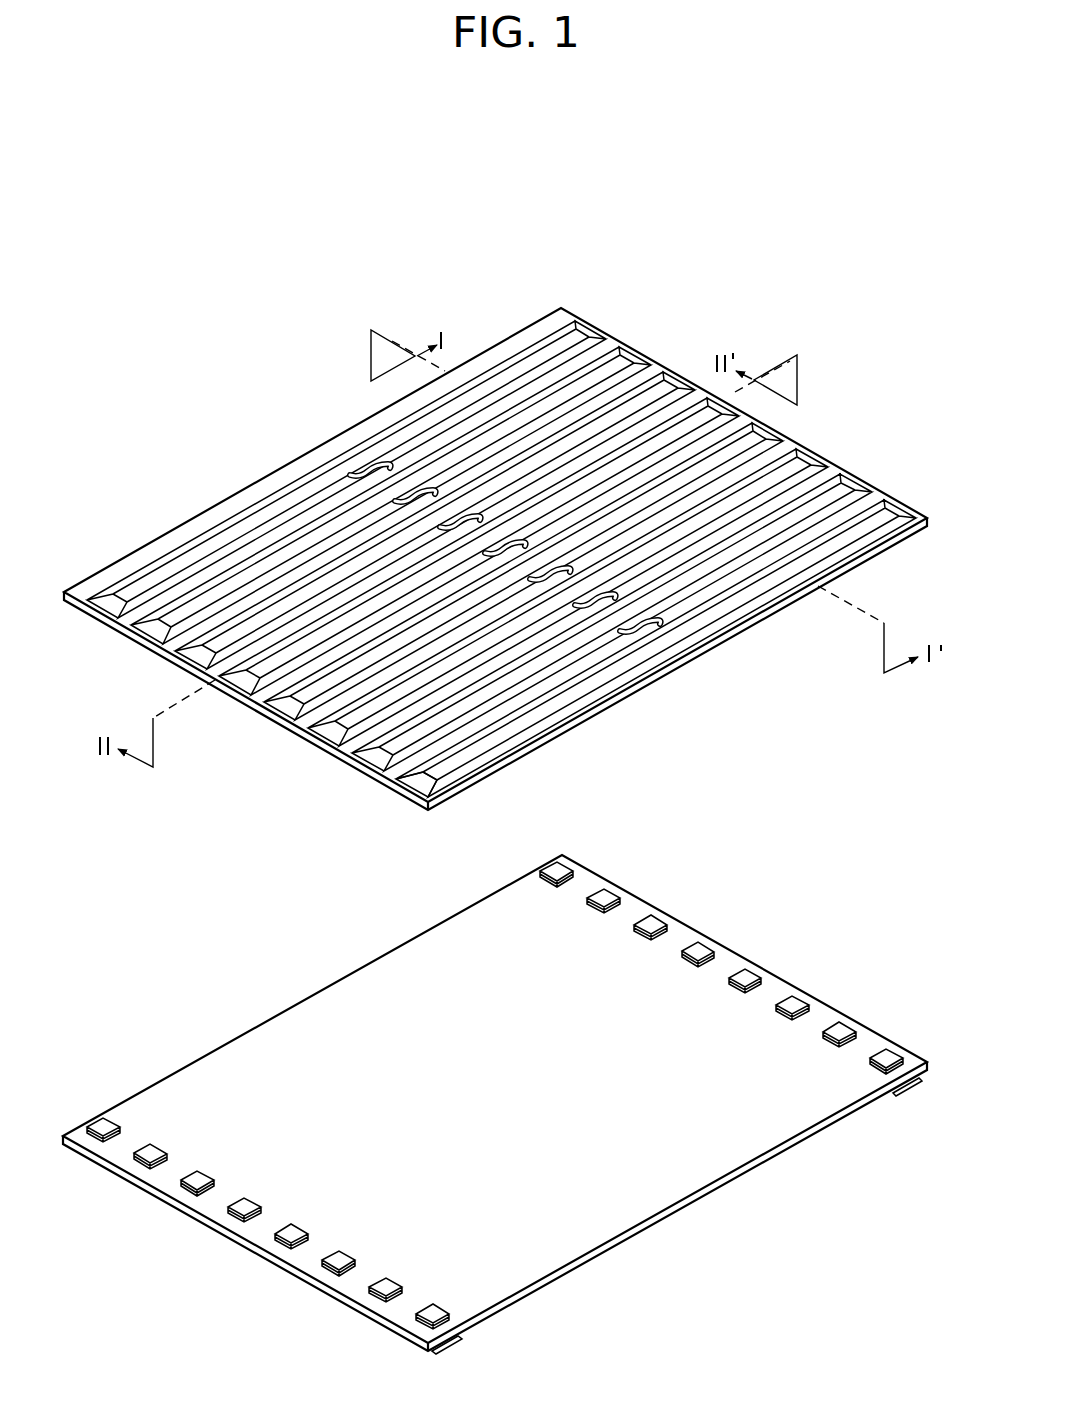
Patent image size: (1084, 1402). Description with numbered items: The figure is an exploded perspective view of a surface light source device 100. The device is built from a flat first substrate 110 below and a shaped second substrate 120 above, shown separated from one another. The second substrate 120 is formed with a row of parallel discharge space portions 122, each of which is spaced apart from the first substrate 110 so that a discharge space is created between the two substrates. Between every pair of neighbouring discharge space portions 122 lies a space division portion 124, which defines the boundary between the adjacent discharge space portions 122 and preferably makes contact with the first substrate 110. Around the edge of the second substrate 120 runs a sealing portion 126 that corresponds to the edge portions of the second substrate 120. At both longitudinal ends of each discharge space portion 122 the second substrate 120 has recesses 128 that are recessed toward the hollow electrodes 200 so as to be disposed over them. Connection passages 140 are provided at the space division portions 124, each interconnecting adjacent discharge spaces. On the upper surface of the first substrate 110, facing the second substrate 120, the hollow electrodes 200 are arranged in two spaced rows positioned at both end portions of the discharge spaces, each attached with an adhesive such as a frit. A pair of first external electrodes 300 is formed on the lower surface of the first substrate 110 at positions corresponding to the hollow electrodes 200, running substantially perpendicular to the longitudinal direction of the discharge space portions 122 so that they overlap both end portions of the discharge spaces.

The surface light source device 100 is at (563, 244).
The first substrate 110 is at (740, 1170).
The second substrate 120 is at (713, 643).
The discharge space portions 122 is at (600, 673).
The space division portions 124 is at (520, 688).
The sealing portion 126 is at (503, 747).
The recesses 128 is at (400, 772).
The connection passages 140 is at (368, 462).
The hollow electrodes 200 is at (752, 970).
The first external electrodes 300 is at (456, 1340).